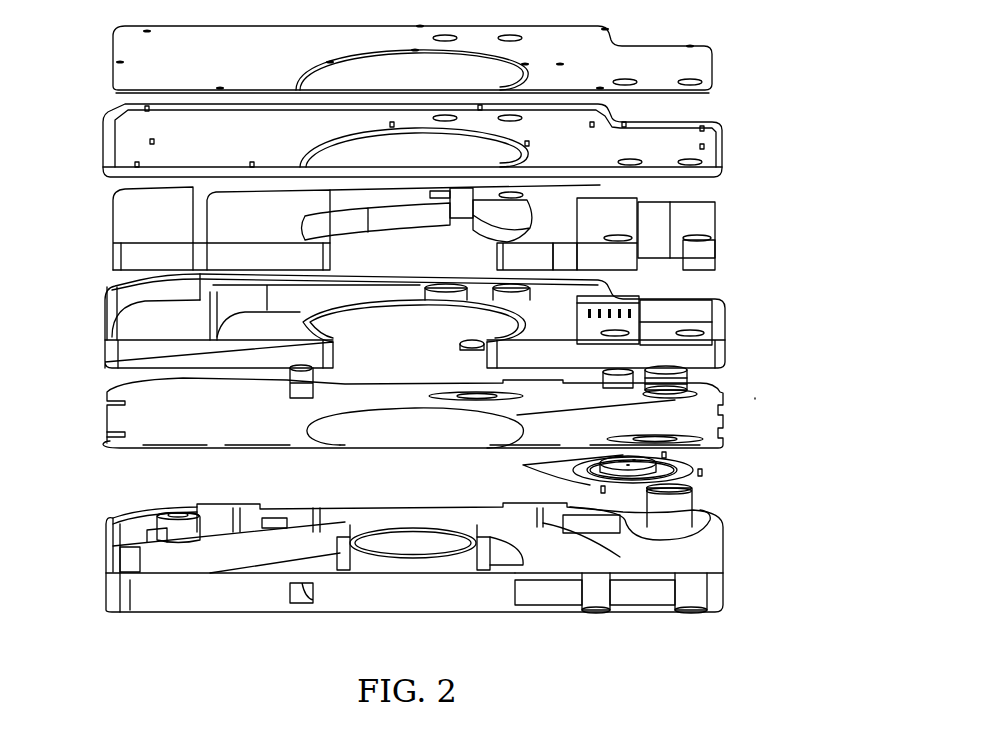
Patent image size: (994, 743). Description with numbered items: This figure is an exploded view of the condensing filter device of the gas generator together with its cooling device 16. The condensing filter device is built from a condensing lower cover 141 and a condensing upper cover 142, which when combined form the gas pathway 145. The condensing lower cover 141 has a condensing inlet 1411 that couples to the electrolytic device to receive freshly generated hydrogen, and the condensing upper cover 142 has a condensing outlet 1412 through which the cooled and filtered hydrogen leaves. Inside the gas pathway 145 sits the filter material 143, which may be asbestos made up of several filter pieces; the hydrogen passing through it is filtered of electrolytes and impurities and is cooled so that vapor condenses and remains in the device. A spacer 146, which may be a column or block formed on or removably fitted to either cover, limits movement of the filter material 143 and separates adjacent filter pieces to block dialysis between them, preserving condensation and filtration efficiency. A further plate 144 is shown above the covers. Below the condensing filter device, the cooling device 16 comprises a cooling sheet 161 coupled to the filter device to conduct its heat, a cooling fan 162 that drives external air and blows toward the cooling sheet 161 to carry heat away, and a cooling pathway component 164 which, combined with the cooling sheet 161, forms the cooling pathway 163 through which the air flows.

The top cover plate 144 is at (116, 46).
The condensing upper cover 142 is at (107, 137).
The filter material 143 is at (118, 225).
The condensing lower cover 141 is at (108, 338).
The condensing inlet 1411 is at (697, 375).
The condensing outlet 1412 is at (460, 340).
The gas pathway 145 is at (648, 332).
The spacer 146 is at (643, 312).
The cooling device 16 is at (790, 399).
The cooling sheet 161 is at (720, 403).
The cooling fan 162 is at (700, 473).
The cooling pathway 163 is at (130, 567).
The cooling pathway component 164 is at (723, 540).